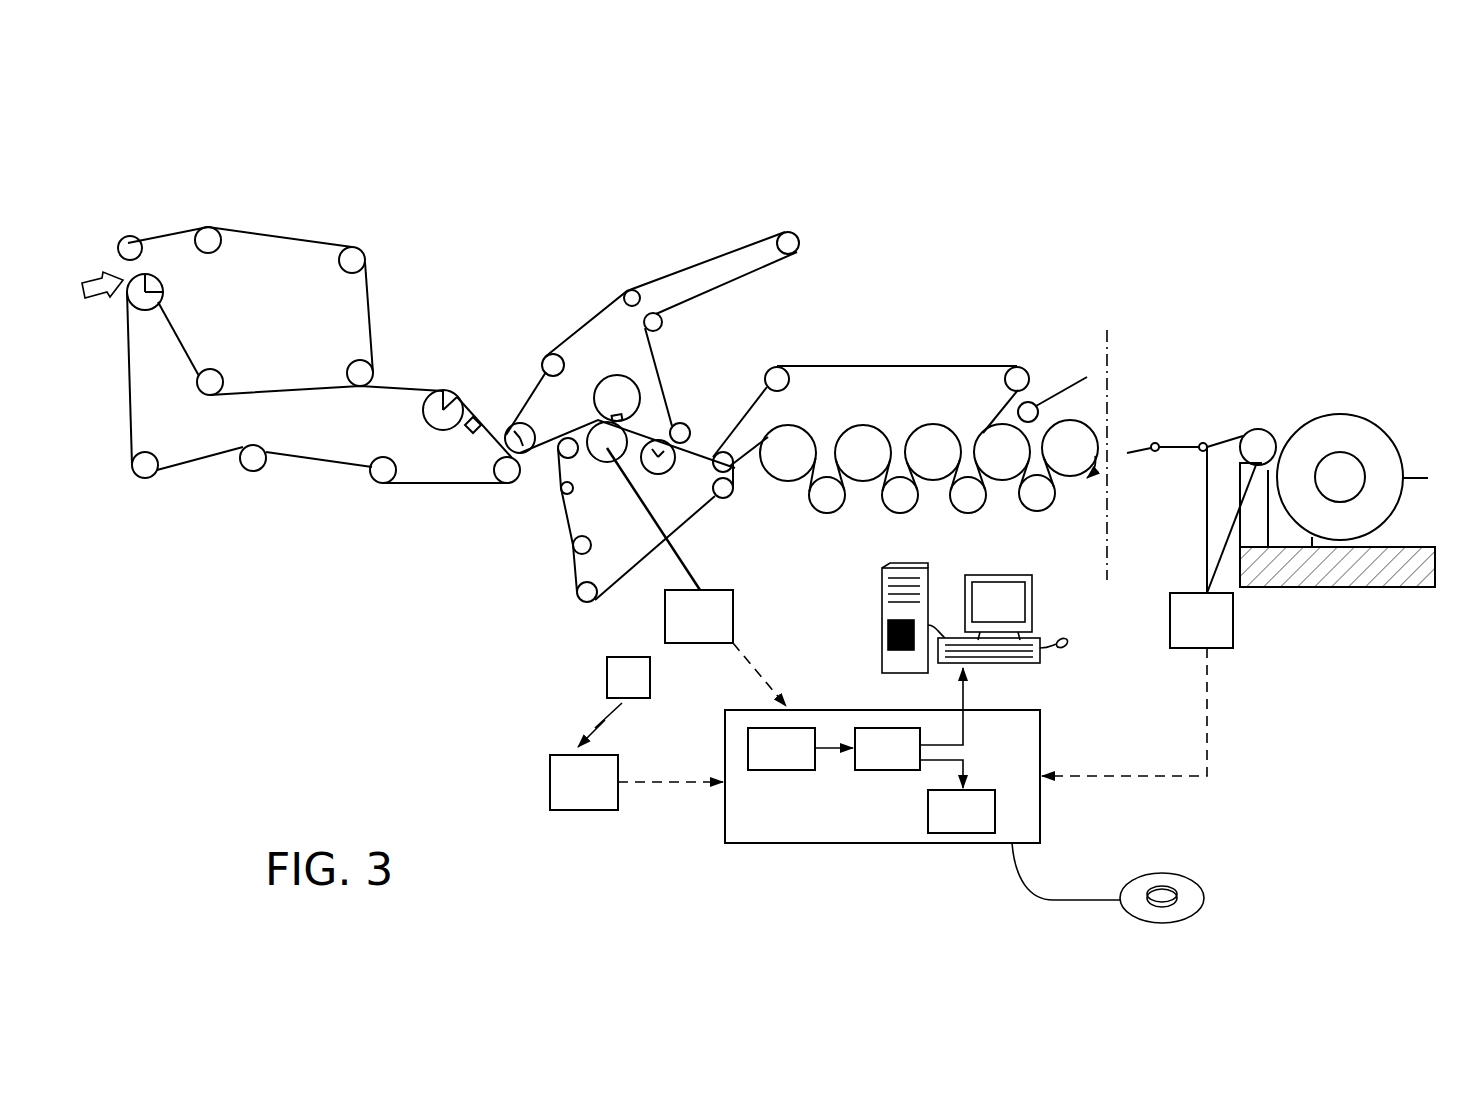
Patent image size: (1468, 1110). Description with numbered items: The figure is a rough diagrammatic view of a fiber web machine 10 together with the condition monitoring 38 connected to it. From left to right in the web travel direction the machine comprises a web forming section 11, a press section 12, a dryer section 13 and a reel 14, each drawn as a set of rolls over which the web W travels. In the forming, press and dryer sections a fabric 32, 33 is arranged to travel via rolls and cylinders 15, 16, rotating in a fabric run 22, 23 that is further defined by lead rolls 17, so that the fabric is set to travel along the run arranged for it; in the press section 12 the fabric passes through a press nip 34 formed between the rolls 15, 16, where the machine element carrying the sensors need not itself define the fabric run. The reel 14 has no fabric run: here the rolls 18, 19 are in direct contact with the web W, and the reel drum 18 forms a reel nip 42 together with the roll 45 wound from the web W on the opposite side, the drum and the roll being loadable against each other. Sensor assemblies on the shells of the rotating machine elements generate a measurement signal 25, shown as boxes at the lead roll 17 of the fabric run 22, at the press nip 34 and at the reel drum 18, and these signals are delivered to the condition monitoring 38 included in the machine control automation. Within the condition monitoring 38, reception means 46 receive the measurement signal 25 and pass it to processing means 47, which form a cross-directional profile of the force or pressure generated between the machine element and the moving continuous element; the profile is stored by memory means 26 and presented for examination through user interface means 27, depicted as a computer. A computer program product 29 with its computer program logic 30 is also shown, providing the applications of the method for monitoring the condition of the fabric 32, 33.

The fiber web machine 10 is at (793, 163).
The web forming section 11 is at (300, 213).
The press section 12 is at (707, 240).
The dryer section 13 is at (857, 352).
The reel 14 is at (1350, 295).
The roll 15 is at (613, 383).
The roll 16 is at (598, 455).
The lead roll 17 is at (793, 242).
The reel drum 18 is at (1262, 437).
The roll 19 is at (1207, 447).
The fabric run 22 is at (675, 370).
The fabric run 23 is at (563, 520).
The measurement signal 25 is at (891, 629).
The memory means 26 is at (961, 811).
The user interface means 27 is at (877, 607).
The computer program product 29 is at (1214, 882).
The computer program logic 30 is at (1160, 917).
The fabric 32 is at (658, 282).
The fabric 33 is at (707, 510).
The press nip 34 is at (593, 418).
The condition monitoring 38 is at (787, 862).
The reel nip 42 is at (1273, 467).
The roll formed from the web 45 is at (1435, 395).
The reception means 46 is at (781, 749).
The processing means 47 is at (887, 749).
The web W is at (1175, 443).